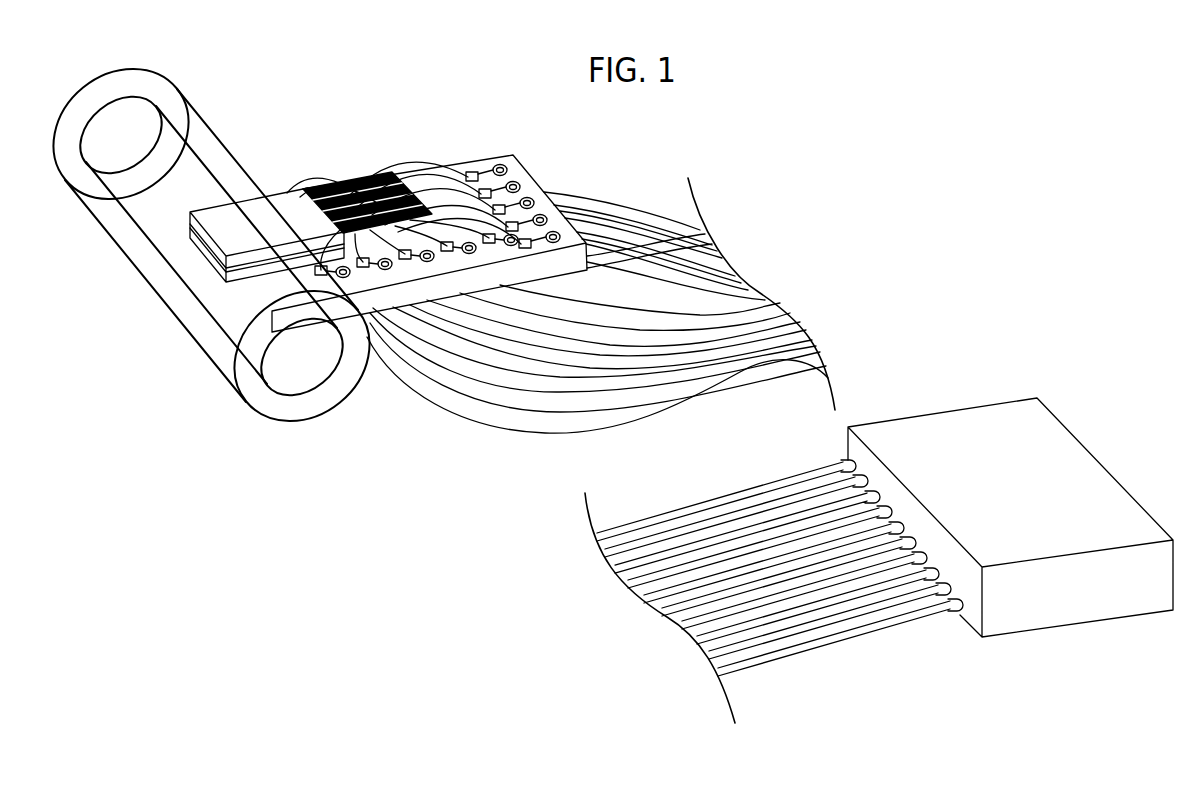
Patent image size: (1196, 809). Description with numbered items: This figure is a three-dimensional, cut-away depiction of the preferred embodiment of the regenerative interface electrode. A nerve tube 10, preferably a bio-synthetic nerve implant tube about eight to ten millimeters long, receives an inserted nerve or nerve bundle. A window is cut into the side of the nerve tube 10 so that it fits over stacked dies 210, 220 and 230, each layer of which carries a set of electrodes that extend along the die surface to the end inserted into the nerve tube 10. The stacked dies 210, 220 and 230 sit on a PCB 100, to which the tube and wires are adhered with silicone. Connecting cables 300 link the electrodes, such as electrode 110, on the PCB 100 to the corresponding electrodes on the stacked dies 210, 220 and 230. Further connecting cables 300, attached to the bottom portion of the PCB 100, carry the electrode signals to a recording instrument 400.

The nerve tube 10 is at (204, 121).
The PCB 100 is at (429, 230).
The electrode 110 is at (478, 169).
The stacked die 210 is at (277, 197).
The stacked die 220 is at (243, 270).
The stacked die 230 is at (190, 229).
The connecting cables 300 is at (350, 188).
The recording instrument 400 is at (1029, 486).